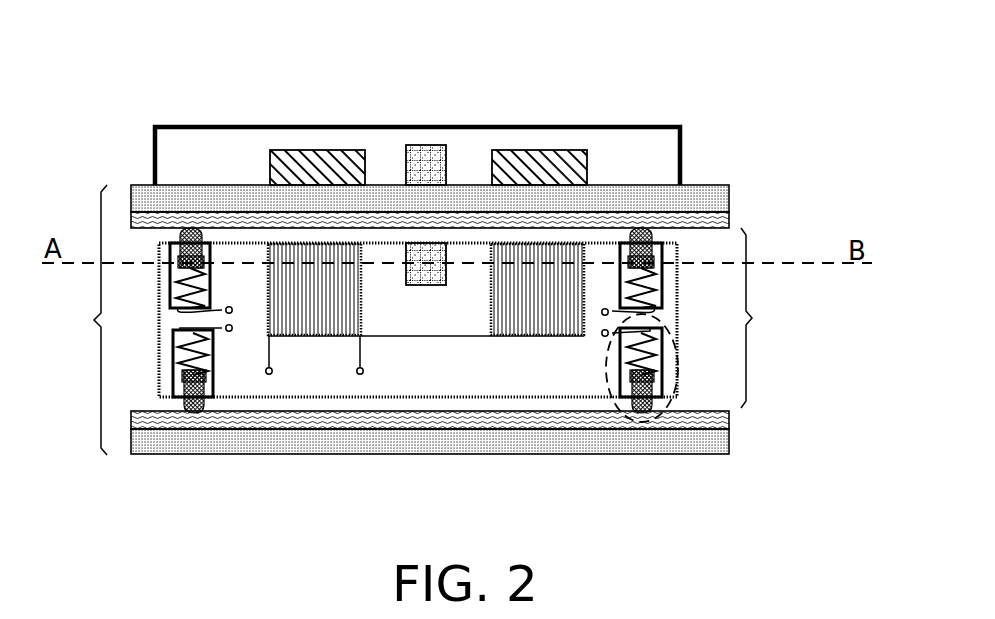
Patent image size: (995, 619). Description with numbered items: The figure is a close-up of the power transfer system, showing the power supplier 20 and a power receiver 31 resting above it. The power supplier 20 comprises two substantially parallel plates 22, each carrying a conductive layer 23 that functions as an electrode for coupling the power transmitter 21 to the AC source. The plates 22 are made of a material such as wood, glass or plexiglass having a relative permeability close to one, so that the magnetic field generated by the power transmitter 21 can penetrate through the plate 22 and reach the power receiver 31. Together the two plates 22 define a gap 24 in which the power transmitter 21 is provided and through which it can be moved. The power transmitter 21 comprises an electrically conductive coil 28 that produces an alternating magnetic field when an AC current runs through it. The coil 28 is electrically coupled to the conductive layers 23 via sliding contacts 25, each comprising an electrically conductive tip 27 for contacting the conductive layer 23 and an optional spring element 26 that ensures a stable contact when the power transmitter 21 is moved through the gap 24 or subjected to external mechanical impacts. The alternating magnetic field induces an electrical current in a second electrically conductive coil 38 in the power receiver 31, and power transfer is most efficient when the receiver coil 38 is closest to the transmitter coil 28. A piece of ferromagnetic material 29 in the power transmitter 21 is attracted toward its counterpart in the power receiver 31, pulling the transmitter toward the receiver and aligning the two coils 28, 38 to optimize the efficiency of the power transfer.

The power supplier 20 is at (82, 320).
The power transmitter 21 is at (433, 398).
The plate 22 is at (730, 196).
The conductive layer 23 is at (730, 222).
The gap 24 is at (768, 318).
The sliding contact 25 is at (697, 430).
The spring element 26 is at (205, 367).
The electrically conductive tip 27 is at (192, 413).
The coil 28 is at (320, 337).
The piece of ferromagnetic material 29 is at (430, 286).
The power receiver 31 is at (222, 127).
The second electrically conductive coil 38 is at (318, 150).